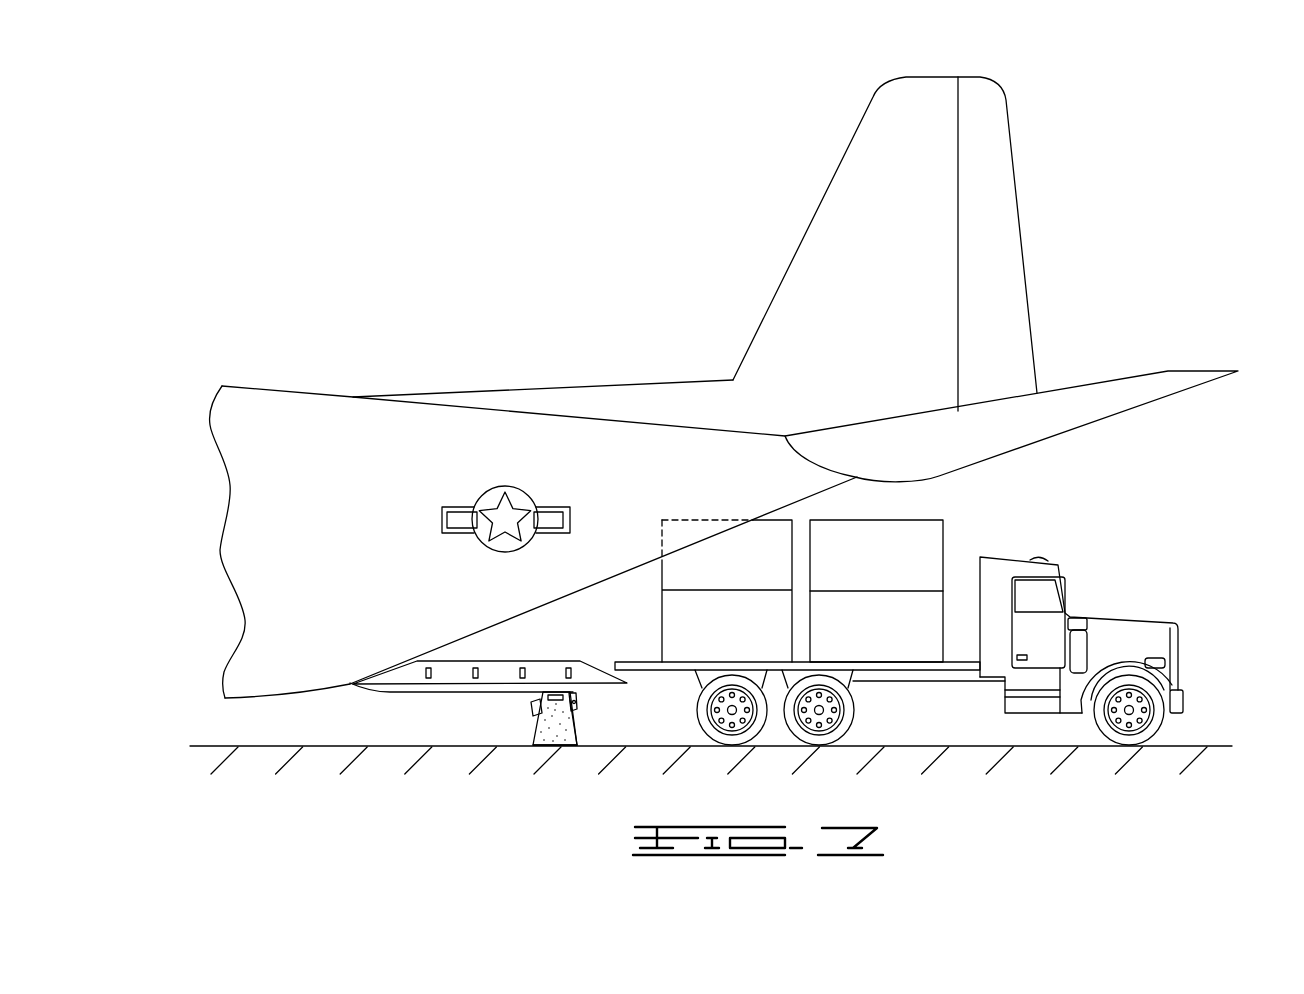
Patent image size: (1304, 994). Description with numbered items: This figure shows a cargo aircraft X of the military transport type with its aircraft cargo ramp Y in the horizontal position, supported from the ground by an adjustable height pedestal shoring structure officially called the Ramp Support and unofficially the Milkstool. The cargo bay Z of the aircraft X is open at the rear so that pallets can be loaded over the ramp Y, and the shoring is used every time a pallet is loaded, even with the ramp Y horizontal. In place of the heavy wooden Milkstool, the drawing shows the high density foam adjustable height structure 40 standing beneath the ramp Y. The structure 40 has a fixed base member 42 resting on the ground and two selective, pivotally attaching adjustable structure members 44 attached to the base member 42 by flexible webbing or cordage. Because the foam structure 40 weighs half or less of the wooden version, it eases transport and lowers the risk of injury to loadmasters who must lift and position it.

The C-130 cargo aircraft X is at (468, 390).
The aircraft cargo ramp Y is at (387, 690).
The cargo bay Z is at (557, 607).
The high density foam adjustable height structure 40 is at (540, 728).
The fixed base member 42 is at (567, 738).
The adjustable structure members 44 is at (530, 710).